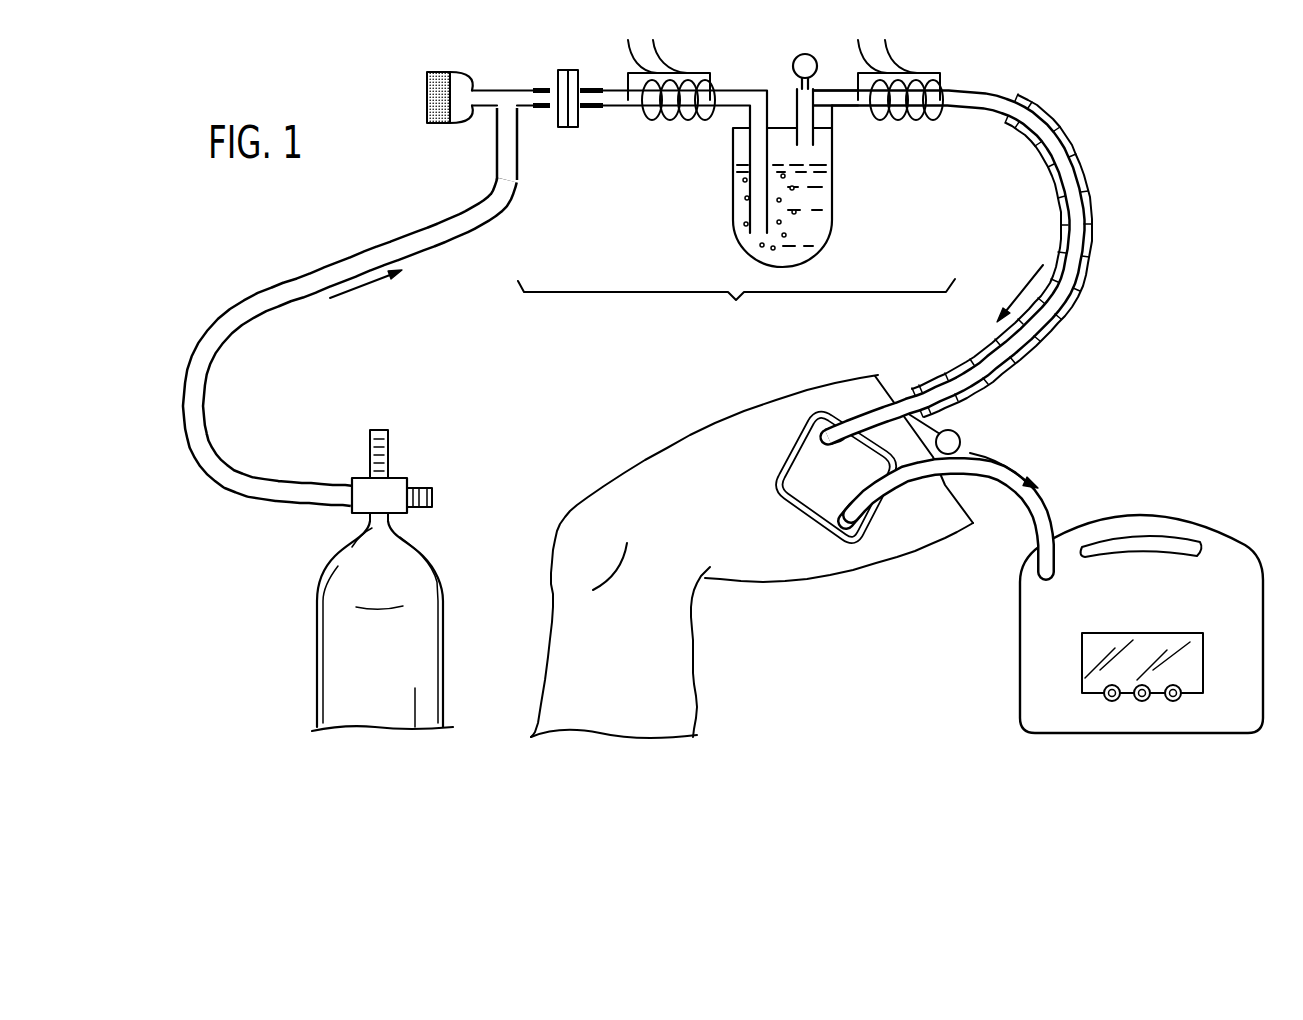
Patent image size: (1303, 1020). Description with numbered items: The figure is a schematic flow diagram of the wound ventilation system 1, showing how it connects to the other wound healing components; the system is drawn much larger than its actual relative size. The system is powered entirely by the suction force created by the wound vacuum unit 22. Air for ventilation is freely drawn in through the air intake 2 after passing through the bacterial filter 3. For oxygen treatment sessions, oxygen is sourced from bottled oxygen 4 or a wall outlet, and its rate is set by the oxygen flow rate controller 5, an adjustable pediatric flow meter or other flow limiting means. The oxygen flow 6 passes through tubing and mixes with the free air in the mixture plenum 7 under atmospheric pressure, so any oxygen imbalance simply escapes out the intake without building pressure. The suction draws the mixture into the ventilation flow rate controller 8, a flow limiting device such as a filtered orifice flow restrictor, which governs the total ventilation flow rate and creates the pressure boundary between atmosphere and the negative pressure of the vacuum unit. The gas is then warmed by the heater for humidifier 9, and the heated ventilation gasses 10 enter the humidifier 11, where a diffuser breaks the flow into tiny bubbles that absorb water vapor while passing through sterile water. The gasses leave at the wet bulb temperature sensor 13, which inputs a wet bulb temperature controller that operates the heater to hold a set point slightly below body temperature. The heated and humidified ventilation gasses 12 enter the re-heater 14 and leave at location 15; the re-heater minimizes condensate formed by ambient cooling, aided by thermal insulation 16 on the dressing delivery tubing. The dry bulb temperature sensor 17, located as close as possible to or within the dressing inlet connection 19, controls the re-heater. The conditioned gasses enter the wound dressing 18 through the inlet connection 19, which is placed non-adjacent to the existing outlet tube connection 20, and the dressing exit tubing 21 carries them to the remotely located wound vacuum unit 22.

The ventilation system 1 is at (736, 300).
The air intake 2 is at (427, 100).
The bacterial filter 3 is at (437, 72).
The bottled oxygen 4 is at (445, 603).
The oxygen flow rate controller 5 is at (417, 507).
The oxygen flow 6 is at (273, 307).
The mixture plenum 7 is at (503, 117).
The ventilation flow rate controller 8 is at (558, 115).
The heater for humidifier 9 is at (652, 72).
The heated ventilation gasses 10 is at (732, 87).
The humidifier 11 is at (733, 193).
The heated and humidified ventilation gasses 12 is at (838, 87).
The wet bulb temperature sensor 13 is at (795, 60).
The re-heater 14 is at (930, 72).
The location 15 is at (977, 87).
The thermal insulation 16 is at (1073, 130).
The dry bulb temperature sensor 17 is at (960, 432).
The wound dressing 18 is at (783, 450).
The dressing inlet connection 19 is at (807, 423).
The outlet tube connection 20 is at (830, 537).
The dressing exit tubing 21 is at (1040, 510).
The wound vacuum unit 22 is at (1140, 512).